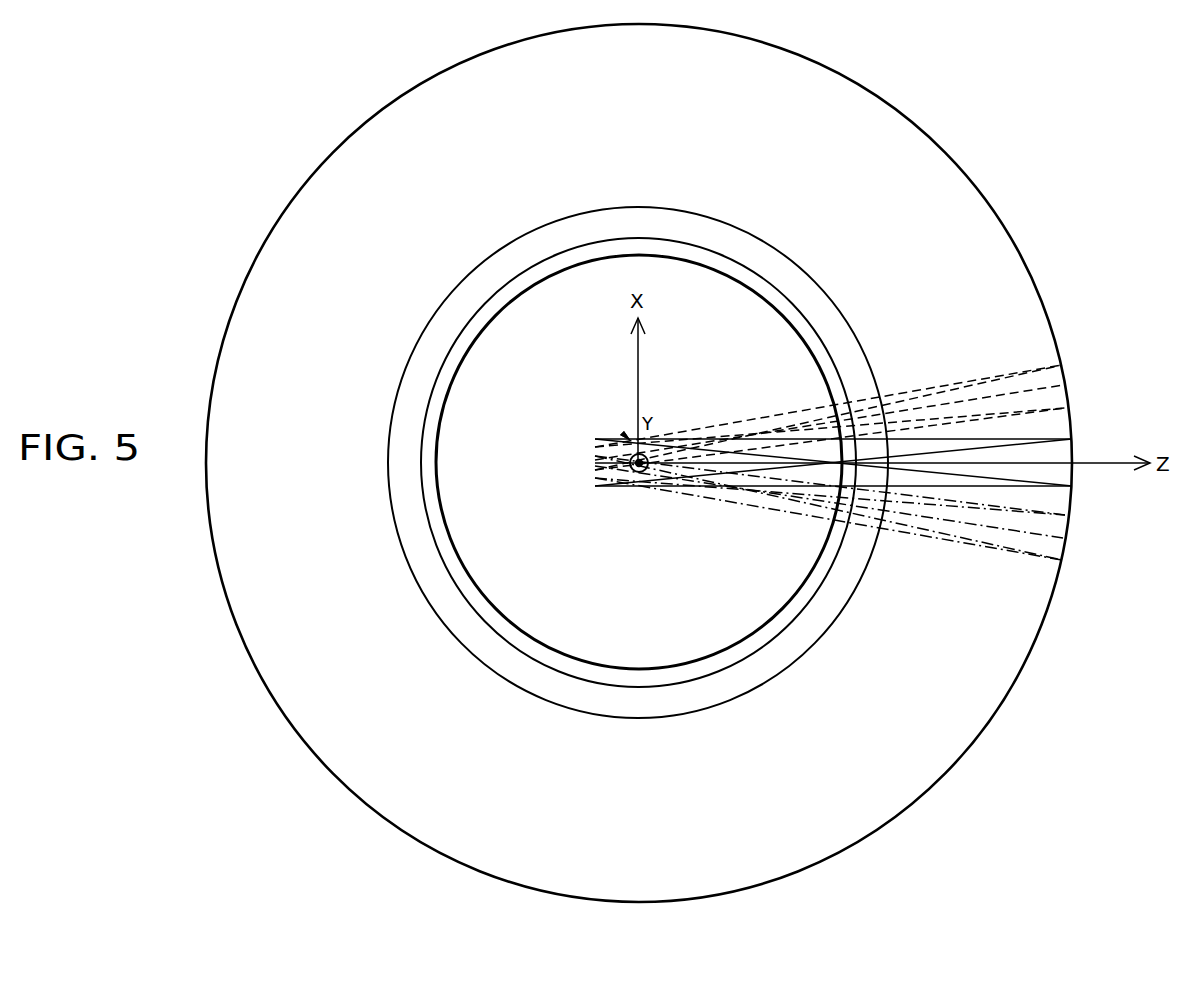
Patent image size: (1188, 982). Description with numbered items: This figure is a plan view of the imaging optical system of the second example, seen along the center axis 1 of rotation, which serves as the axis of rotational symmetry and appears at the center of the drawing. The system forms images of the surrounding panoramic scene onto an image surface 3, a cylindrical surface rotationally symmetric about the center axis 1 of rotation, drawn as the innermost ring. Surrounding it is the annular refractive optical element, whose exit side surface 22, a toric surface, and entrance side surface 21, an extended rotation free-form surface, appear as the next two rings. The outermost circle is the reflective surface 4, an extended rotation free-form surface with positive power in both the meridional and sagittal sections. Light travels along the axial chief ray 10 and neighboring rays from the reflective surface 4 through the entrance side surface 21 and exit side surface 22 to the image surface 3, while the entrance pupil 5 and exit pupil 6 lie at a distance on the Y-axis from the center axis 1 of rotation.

The center axis of rotation 1 is at (650, 478).
The image surface 3 is at (803, 585).
The reflective surface 4 is at (1062, 562).
The entrance pupil 5 is at (622, 432).
The exit pupil 6 is at (625, 436).
The axial chief ray 10 is at (612, 468).
The entrance side surface 21 is at (877, 550).
The exit side surface 22 is at (838, 557).